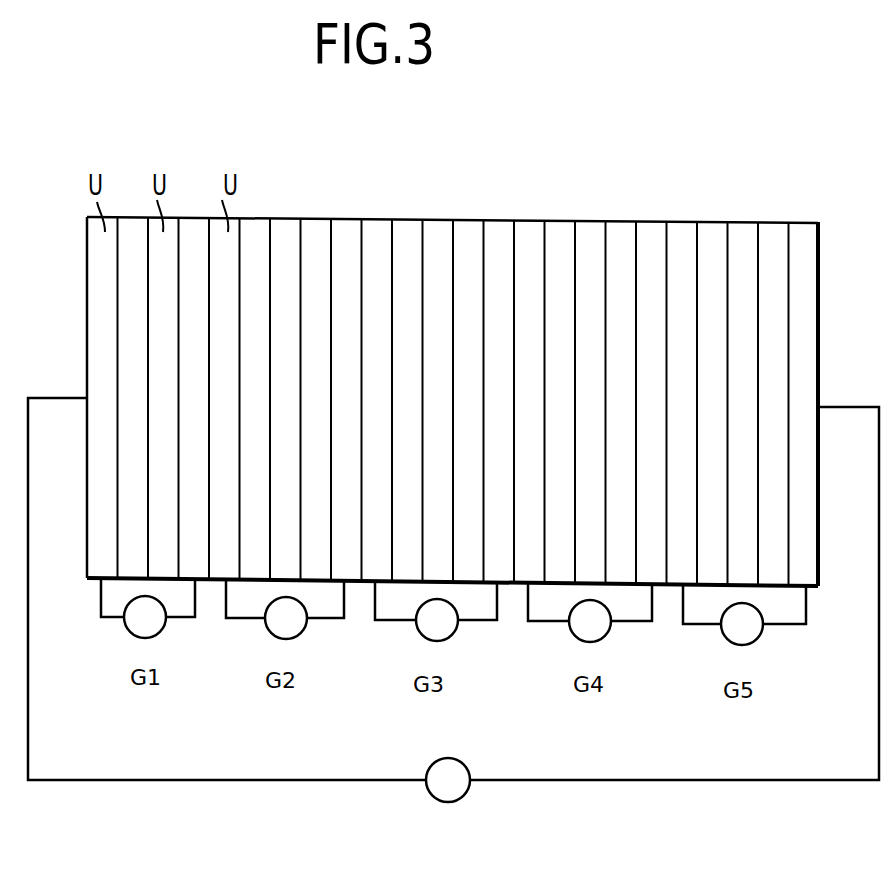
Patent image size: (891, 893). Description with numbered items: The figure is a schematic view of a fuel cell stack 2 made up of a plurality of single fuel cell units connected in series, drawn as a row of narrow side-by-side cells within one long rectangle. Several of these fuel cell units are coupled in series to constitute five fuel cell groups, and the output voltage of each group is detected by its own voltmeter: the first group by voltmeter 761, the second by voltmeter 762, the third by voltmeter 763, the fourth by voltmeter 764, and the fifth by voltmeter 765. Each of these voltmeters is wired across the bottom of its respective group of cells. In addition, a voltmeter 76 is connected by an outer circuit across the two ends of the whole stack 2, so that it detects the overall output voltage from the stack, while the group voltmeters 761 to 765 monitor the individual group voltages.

The fuel cell stack 2 is at (466, 209).
The voltmeter 76 is at (464, 796).
The voltmeter 761 is at (159, 632).
The voltmeter 762 is at (300, 633).
The voltmeter 763 is at (441, 640).
The voltmeter 764 is at (598, 641).
The voltmeter 765 is at (751, 644).